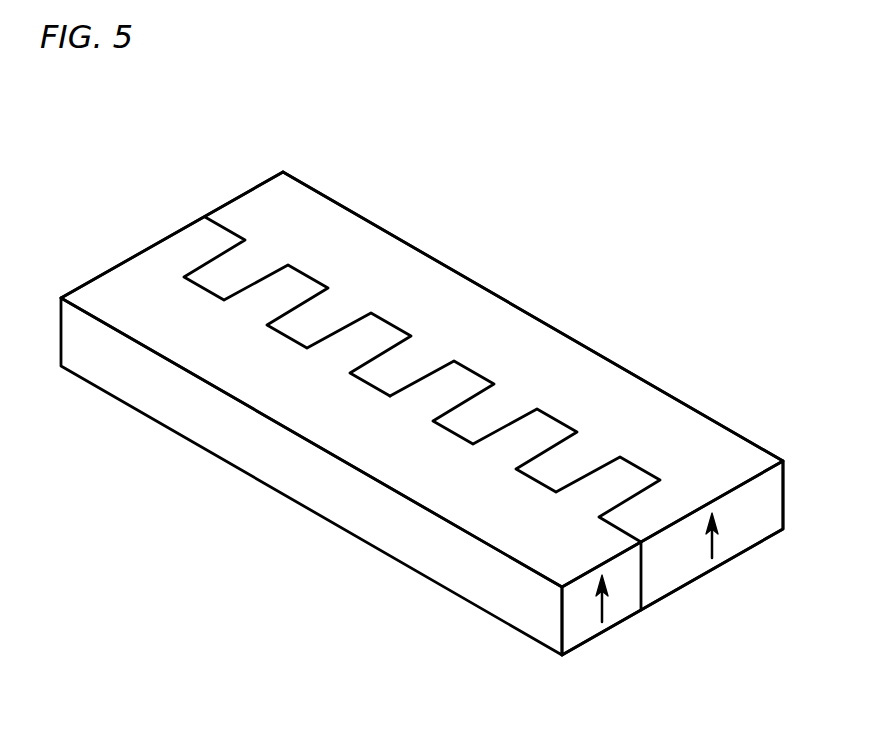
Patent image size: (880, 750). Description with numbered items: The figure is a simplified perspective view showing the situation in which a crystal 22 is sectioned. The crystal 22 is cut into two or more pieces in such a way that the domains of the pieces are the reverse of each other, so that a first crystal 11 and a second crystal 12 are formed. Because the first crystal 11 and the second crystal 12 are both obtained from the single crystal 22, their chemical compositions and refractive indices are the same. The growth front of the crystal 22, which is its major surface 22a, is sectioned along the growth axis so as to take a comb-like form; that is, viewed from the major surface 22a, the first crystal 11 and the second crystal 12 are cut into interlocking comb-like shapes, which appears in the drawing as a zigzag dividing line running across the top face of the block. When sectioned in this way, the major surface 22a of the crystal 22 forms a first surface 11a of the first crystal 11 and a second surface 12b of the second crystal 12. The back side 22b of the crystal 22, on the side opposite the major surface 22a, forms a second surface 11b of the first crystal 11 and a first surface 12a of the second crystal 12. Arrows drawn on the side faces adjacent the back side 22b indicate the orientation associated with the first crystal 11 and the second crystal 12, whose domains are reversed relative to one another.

The crystal 22 is at (420, 415).
The major surface 22a is at (422, 339).
The back side 22b is at (672, 599).
The first crystal 11 is at (80, 342).
The second crystal 12 is at (765, 500).
The first surface 11a is at (118, 297).
The second surface 11b is at (608, 627).
The first surface 12a is at (693, 585).
The second surface 12b is at (255, 213).